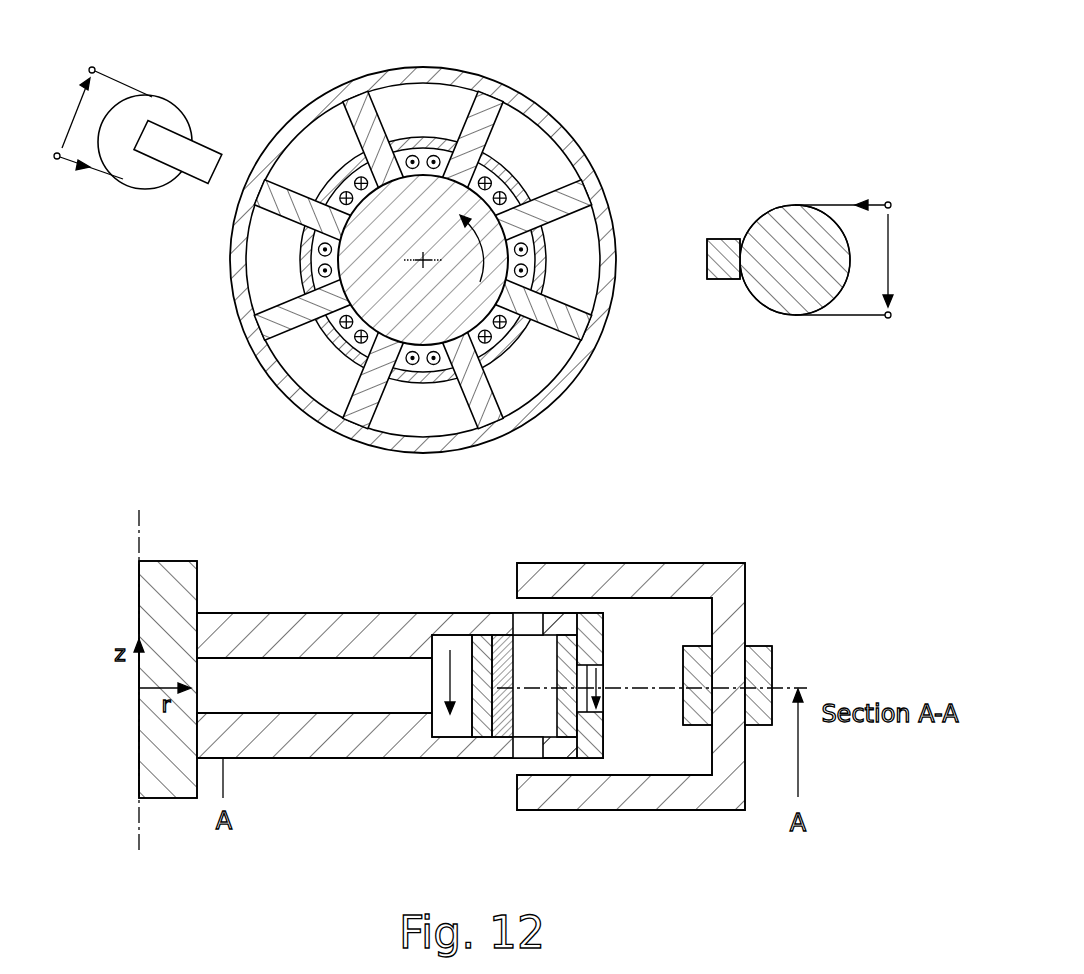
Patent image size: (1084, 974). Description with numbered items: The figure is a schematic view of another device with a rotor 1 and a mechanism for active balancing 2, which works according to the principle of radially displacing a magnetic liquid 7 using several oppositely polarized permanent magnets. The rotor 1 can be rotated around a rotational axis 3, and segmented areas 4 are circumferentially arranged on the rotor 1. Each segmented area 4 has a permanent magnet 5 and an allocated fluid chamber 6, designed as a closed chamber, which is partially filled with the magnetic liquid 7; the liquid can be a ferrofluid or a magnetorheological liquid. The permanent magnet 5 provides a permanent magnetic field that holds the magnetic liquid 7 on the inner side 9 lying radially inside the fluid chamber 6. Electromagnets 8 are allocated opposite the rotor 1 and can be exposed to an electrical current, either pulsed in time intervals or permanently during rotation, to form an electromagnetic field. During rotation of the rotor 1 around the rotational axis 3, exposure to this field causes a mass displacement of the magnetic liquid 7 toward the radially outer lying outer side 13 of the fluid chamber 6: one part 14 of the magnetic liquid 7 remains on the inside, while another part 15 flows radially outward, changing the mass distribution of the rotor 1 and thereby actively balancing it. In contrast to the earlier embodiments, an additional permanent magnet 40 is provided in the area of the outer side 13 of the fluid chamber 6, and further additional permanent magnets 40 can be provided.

The rotor 1 is at (245, 291).
The mechanism for active balancing 2 is at (730, 607).
The rotational axis 3 is at (418, 261).
The segmented areas 4 is at (312, 130).
The permanent magnet 5 is at (508, 163).
The fluid chamber 6 is at (400, 98).
The magnetic liquid 7 is at (523, 350).
The electromagnet 8 is at (133, 175).
The inner side 9 is at (330, 347).
The outer side 13 is at (523, 93).
The one part of the magnetic liquid 14 is at (553, 255).
The another part of the magnetic liquid 15 is at (597, 209).
The additional permanent magnet 40 is at (600, 682).